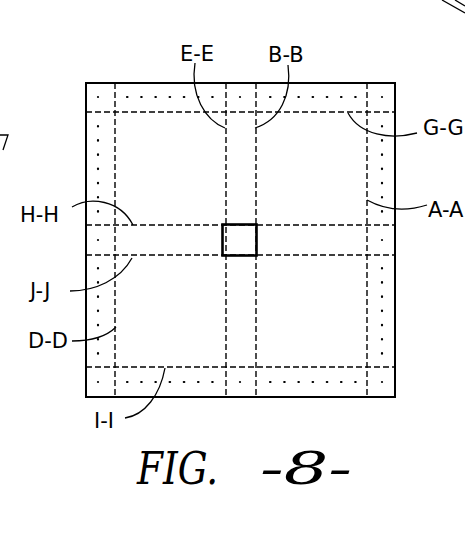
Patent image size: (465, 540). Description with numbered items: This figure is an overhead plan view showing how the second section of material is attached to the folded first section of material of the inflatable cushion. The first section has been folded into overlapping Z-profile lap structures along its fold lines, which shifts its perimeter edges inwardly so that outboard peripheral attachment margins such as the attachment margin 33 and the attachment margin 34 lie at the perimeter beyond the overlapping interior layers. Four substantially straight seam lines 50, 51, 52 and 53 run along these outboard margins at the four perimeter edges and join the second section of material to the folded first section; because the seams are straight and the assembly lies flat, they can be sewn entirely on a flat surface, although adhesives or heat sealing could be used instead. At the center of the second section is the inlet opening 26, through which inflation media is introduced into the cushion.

The inlet opening 26 is at (252, 238).
The outboard peripheral attachment margin 33 is at (395, 72).
The outboard peripheral attachment margin 34 is at (115, 72).
The seam line 50 is at (157, 97).
The seam line 51 is at (383, 310).
The seam line 52 is at (339, 383).
The seam line 53 is at (100, 182).